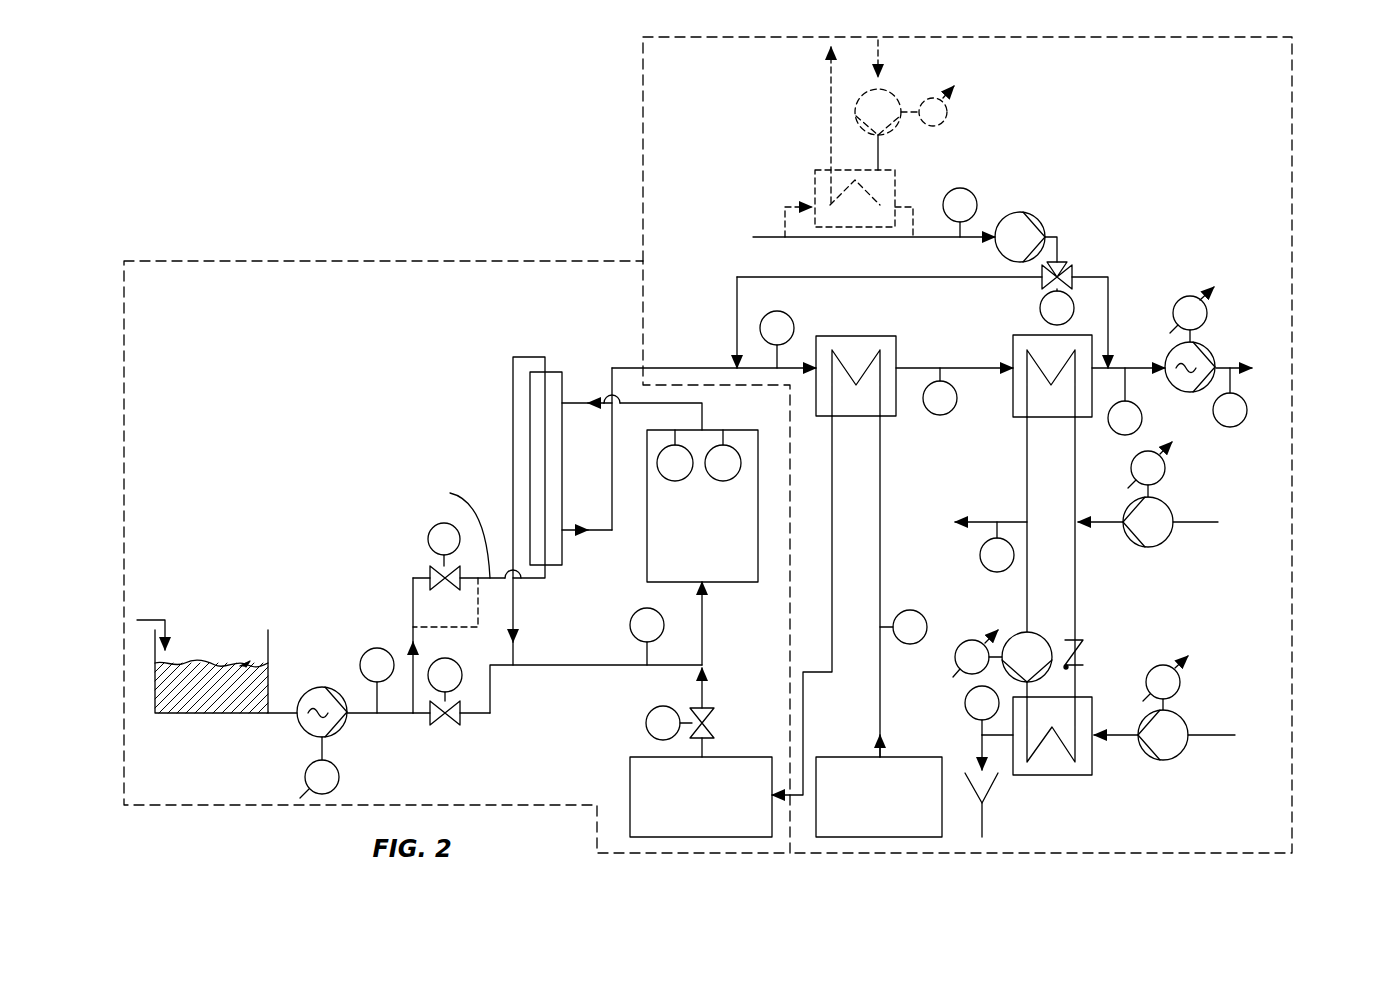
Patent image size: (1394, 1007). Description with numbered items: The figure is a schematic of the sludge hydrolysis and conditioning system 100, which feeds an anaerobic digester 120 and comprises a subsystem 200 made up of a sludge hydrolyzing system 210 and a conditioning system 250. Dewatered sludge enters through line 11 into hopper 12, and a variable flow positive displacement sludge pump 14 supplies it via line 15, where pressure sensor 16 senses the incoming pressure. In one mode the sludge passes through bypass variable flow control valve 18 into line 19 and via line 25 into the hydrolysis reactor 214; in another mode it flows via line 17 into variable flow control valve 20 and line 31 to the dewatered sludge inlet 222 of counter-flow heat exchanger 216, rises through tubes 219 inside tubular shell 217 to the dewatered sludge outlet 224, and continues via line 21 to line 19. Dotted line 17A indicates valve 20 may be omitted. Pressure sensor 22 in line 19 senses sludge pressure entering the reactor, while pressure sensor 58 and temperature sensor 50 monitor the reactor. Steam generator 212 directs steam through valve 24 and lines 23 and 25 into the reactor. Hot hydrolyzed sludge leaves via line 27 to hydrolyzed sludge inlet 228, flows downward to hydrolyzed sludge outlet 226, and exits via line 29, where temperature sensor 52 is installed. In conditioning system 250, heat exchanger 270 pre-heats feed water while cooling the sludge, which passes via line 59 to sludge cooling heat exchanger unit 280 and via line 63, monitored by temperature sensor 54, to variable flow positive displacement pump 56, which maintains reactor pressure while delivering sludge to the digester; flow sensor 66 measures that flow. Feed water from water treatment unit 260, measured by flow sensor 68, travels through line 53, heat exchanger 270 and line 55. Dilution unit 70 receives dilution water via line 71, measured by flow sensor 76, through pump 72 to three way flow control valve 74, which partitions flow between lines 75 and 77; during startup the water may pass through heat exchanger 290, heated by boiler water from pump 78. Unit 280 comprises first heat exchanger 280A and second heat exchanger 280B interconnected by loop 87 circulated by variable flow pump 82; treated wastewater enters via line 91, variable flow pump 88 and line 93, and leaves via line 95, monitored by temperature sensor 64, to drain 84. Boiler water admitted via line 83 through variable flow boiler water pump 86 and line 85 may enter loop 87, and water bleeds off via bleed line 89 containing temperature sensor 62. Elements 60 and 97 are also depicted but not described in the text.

The line 11 is at (165, 619).
The hopper 12 is at (165, 714).
The variable flow positive displacement sludge pump 14 is at (338, 777).
The line 15 is at (355, 715).
The pressure sensor 16 is at (368, 652).
The line 17 is at (412, 612).
The dotted line 17A is at (455, 628).
The bypass variable flow control valve 18 is at (470, 750).
The line 19 is at (533, 667).
The variable flow control valve 20 is at (428, 568).
The line 21 is at (513, 478).
The pressure sensor 22 is at (632, 632).
The line 23 is at (707, 694).
The valve 24 is at (645, 712).
The line 25 is at (705, 622).
The line 27 is at (705, 413).
The line 29 is at (632, 368).
The line 31 is at (458, 530).
The temperature sensor 50 is at (733, 477).
The temperature sensor 52 is at (792, 315).
The line 53 is at (882, 551).
The temperature sensor 54 is at (1142, 415).
The line 55 is at (829, 587).
The variable flow positive displacement pump 56 is at (1216, 329).
The pressure sensor 58 is at (687, 478).
The line 59 is at (942, 367).
The temperature sensor T4 60 is at (953, 412).
The temperature sensor 62 is at (983, 566).
The line 63 is at (1147, 367).
The temperature sensor 64 is at (966, 697).
The flow sensor 66 is at (1243, 425).
The flow sensor 68 is at (906, 611).
The dilution unit 70 is at (909, 182).
The line 71 is at (943, 235).
The pump 72 is at (1040, 222).
The three way flow control valve 74 is at (1086, 265).
The line 75 is at (1110, 299).
The flow sensor 76 is at (975, 196).
The line 77 is at (735, 326).
The pump 78 is at (944, 73).
The variable flow pump 82 is at (1005, 623).
The line 83 is at (1190, 524).
The drain 84 is at (997, 783).
The line 85 is at (1107, 520).
The variable flow boiler water pump 86 is at (1178, 487).
The loop 87 is at (1075, 622).
The variable flow pump 88 is at (1201, 718).
The bleed line 89 is at (985, 520).
The line 91 is at (1212, 737).
The line 93 is at (1130, 733).
The line 95 is at (980, 745).
The drain outlet 97 is at (985, 826).
The sludge hydrolysis and conditioning system 100 is at (320, 195).
The anaerobic digester 120 is at (1284, 365).
The subsystem 200 is at (268, 826).
The sludge hydrolyzing system 210 is at (150, 787).
The steam generator 212 is at (684, 831).
The hydrolysis reactor 214 is at (685, 576).
The heat exchanger 216 is at (510, 428).
The tubular shell 217 is at (528, 445).
The tubes 219 is at (540, 420).
The dewatered sludge inlet 222 is at (548, 578).
The dewatered sludge outlet 224 is at (540, 357).
The hydrolyzed sludge outlet 226 is at (573, 533).
The hydrolyzed sludge inlet 228 is at (573, 400).
The conditioning system 250 is at (1066, 831).
The water treatment unit 260 is at (862, 831).
The heat exchanger 270 is at (839, 411).
The sludge cooling heat exchanger unit 280 is at (1026, 555).
The first heat exchanger 280A is at (1031, 412).
The second heat exchanger 280B is at (1031, 724).
The heat exchanger 290 is at (838, 224).